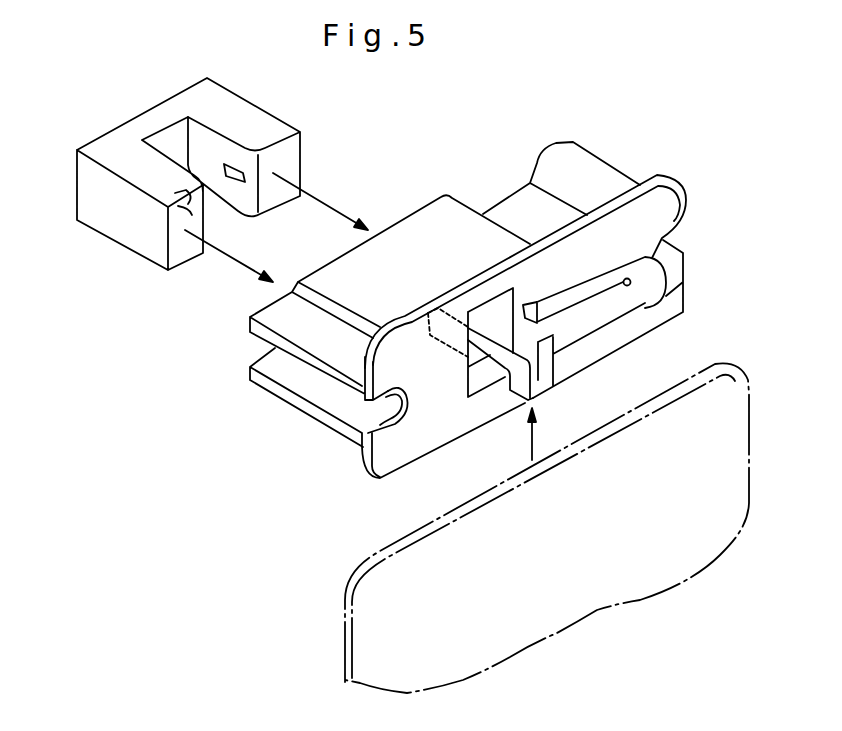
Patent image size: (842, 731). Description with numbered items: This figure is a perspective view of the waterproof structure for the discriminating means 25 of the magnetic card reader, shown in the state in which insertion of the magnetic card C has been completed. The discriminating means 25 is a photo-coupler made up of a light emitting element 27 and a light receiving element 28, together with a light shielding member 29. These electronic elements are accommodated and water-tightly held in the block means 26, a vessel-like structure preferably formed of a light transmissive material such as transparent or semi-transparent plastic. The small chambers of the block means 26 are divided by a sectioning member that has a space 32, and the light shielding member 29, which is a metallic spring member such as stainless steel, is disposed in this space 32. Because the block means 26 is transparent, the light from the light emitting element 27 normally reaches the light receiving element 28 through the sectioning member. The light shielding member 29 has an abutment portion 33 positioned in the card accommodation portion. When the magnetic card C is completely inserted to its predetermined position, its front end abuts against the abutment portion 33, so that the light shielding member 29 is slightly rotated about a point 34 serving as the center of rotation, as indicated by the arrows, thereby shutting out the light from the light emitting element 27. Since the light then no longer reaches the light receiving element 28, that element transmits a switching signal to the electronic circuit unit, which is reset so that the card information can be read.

The discriminating means 25 is at (122, 218).
The block means 26 is at (412, 353).
The light emitting element 27 is at (192, 202).
The light receiving element 28 is at (236, 167).
The light shielding member 29 is at (447, 353).
The space 32 is at (483, 320).
The abutment portion 33 is at (547, 407).
The point 34 is at (612, 289).
The magnetic card C is at (398, 582).